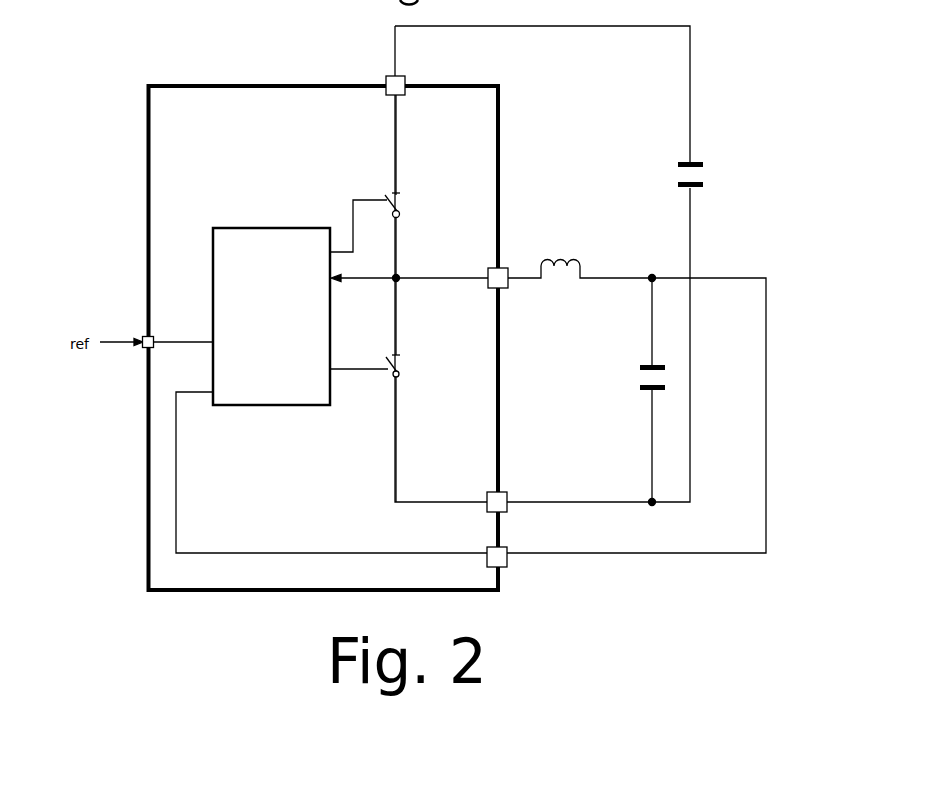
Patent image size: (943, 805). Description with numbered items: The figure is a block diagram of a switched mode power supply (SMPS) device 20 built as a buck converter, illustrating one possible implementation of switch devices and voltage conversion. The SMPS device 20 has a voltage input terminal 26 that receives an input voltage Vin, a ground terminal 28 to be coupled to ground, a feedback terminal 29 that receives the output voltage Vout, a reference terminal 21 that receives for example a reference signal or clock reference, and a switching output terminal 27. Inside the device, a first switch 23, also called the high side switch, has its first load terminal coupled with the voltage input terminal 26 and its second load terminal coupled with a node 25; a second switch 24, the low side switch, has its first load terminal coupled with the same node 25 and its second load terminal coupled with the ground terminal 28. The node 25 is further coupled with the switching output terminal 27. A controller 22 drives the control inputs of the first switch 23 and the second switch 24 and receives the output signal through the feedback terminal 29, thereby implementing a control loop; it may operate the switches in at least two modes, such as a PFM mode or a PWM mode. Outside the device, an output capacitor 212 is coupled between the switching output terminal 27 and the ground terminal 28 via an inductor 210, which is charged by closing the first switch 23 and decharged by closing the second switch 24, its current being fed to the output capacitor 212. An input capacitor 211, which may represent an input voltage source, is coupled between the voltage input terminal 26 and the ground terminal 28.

The switched mode power supply device 20 is at (188, 81).
The reference terminal 21 is at (144, 331).
The controller 22 is at (241, 225).
The first switch 23 is at (402, 208).
The second switch 24 is at (400, 368).
The node 25 is at (400, 274).
The voltage input terminal 26 is at (381, 71).
The switching output terminal 27 is at (509, 263).
The ground terminal 28 is at (510, 487).
The feedback terminal 29 is at (512, 568).
The inductor 210 is at (568, 255).
The input capacitor 211 is at (704, 160).
The output capacitor 212 is at (667, 365).